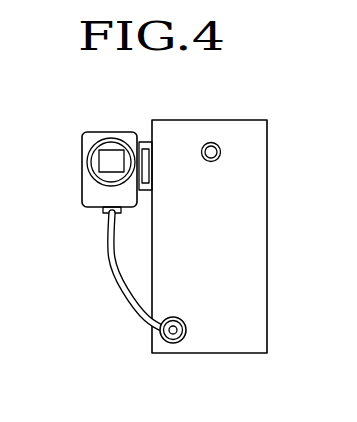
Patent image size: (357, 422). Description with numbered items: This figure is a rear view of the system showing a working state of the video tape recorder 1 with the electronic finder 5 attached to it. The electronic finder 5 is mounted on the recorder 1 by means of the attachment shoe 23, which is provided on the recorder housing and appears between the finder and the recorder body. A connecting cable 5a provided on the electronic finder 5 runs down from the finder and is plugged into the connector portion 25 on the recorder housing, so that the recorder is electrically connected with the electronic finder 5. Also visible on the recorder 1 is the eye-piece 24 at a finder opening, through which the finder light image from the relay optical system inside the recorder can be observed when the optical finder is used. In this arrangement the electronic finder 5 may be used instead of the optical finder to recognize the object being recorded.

The video tape recorder 1 is at (268, 219).
The electronic finder 5 is at (86, 140).
The connecting cable 5a is at (108, 256).
The shoe 23 is at (146, 141).
The eye-piece 24 is at (211, 142).
The connector portion 25 is at (176, 345).